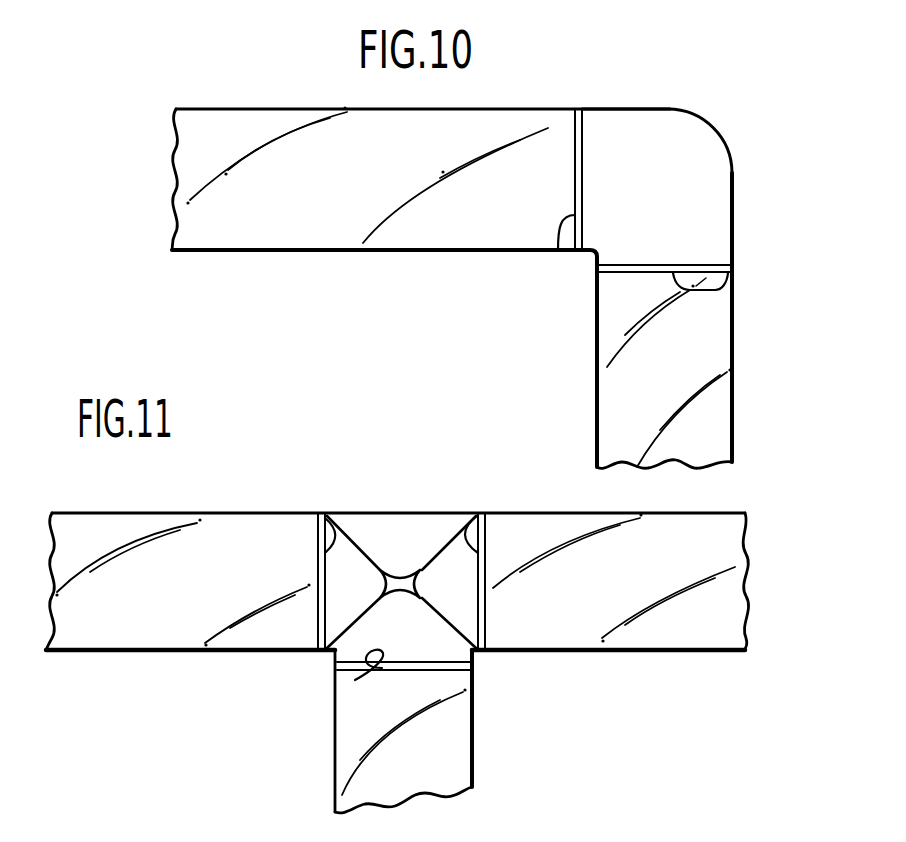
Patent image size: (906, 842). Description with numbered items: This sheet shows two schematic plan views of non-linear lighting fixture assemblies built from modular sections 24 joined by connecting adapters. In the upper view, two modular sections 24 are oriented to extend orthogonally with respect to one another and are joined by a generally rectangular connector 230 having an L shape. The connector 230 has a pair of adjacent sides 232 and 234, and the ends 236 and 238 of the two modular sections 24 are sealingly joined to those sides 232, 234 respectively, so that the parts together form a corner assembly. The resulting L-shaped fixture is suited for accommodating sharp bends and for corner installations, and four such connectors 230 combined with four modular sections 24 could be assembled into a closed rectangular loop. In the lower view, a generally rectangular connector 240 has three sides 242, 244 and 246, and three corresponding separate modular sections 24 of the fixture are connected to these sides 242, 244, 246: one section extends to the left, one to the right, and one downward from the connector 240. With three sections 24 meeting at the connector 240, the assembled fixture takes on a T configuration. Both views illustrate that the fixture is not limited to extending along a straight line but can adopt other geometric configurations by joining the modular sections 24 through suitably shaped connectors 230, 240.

In FIG. 10, the modular section 24 is at (265, 228).
In FIG. 11, the modular section 24 is at (163, 622).
In FIG. 10, the connector 230 is at (650, 148).
In FIG. 10, the side 232 is at (585, 138).
In FIG. 10, the side 234 is at (698, 264).
In FIG. 10, the end 236 is at (558, 250).
In FIG. 10, the end 238 is at (733, 283).
In FIG. 11, the connector 240 is at (400, 530).
In FIG. 11, the side 242 is at (338, 528).
In FIG. 11, the side 244 is at (355, 680).
In FIG. 11, the side 246 is at (463, 530).